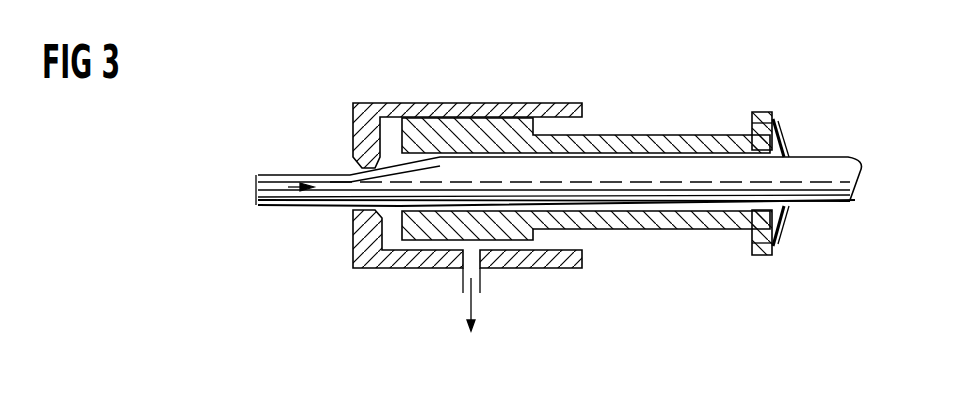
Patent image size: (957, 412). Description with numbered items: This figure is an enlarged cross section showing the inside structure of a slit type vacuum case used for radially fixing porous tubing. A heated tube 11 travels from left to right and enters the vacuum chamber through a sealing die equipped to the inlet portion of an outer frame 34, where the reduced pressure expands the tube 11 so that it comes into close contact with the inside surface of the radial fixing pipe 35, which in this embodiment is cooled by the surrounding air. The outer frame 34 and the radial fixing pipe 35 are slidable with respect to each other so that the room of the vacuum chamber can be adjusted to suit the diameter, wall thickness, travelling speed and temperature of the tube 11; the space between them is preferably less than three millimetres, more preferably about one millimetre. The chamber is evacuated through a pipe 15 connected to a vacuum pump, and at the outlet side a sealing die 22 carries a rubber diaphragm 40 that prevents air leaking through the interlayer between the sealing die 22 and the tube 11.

The tube 11 is at (316, 206).
The pipe 15 is at (462, 280).
The sealing die 22 is at (757, 111).
The outer frame 34 is at (404, 108).
The radial fixing pipe 35 is at (598, 143).
The rubber diaphragm 40 is at (783, 135).